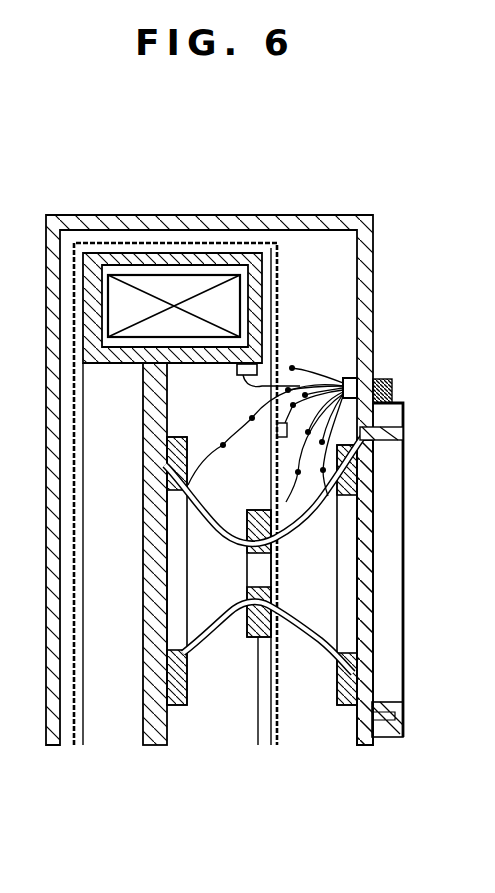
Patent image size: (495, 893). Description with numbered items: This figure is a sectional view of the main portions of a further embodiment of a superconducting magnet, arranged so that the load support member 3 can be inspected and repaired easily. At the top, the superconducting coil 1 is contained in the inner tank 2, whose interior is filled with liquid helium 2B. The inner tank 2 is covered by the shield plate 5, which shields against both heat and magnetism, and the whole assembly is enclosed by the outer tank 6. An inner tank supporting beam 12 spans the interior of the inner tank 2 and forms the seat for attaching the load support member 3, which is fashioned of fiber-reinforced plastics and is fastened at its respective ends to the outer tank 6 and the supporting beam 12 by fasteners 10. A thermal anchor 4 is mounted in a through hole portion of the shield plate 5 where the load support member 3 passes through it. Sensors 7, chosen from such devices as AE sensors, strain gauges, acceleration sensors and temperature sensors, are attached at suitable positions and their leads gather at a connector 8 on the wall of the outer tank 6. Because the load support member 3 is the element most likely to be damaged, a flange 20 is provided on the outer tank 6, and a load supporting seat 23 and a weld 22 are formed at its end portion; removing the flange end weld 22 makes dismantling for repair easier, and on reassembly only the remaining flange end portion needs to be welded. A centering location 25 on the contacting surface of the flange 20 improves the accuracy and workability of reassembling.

The superconducting coil 1 is at (163, 288).
The inner tank 2 is at (253, 262).
The liquid helium 2B is at (210, 262).
The load support member 3 is at (372, 600).
The thermal anchor 4 is at (255, 638).
The shield plate 5 is at (280, 273).
The outer tank 6 is at (368, 290).
The sensor 7 is at (376, 530).
The connector 8 is at (385, 377).
The fastener 10 is at (173, 707).
The inner tank supporting beam 12 is at (145, 642).
The flange 20 is at (388, 445).
The weld 22 is at (405, 424).
The load supporting seat 23 is at (366, 492).
The centering location 25 is at (387, 699).